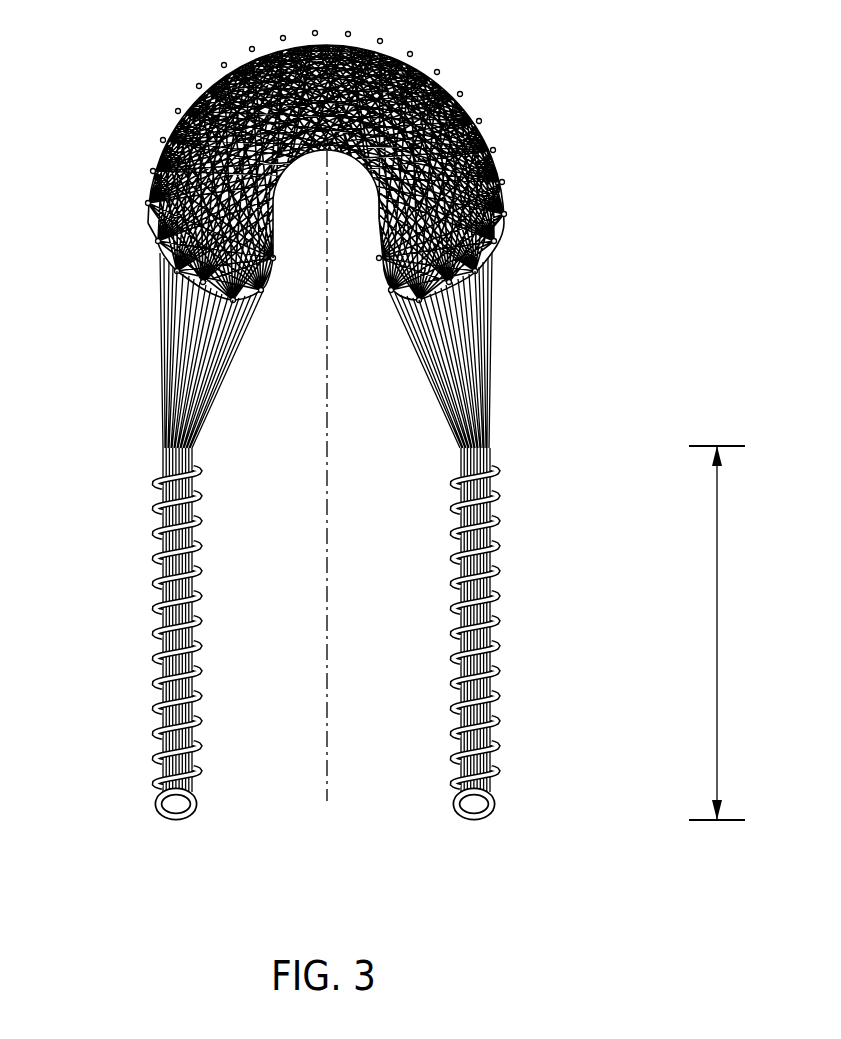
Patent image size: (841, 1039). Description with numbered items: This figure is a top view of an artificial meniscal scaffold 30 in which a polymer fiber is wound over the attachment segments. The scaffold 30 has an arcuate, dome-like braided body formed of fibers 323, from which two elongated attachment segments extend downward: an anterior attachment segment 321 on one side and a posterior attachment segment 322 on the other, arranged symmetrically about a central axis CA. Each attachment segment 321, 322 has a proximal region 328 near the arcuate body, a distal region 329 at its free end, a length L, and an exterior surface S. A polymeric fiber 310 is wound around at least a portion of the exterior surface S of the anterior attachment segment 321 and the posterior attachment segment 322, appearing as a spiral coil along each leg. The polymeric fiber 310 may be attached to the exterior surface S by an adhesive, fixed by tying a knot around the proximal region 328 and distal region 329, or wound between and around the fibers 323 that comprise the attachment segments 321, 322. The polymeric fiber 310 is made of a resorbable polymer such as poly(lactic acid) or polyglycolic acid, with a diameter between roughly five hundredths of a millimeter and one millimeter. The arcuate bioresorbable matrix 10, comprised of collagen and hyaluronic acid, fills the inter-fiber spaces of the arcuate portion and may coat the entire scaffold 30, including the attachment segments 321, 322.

The arcuate bioresorbable matrix 10 is at (326, 152).
The artificial meniscal scaffold 30 is at (291, 429).
The polymeric fiber 310 is at (132, 690).
The anterior attachment segment 321 is at (158, 535).
The posterior attachment segment 322 is at (424, 595).
The fibers 323 is at (125, 203).
The proximal region 328 is at (490, 433).
The distal region 329 is at (490, 728).
The exterior surface S is at (207, 726).
The central axis CA is at (328, 502).
The length L is at (708, 607).